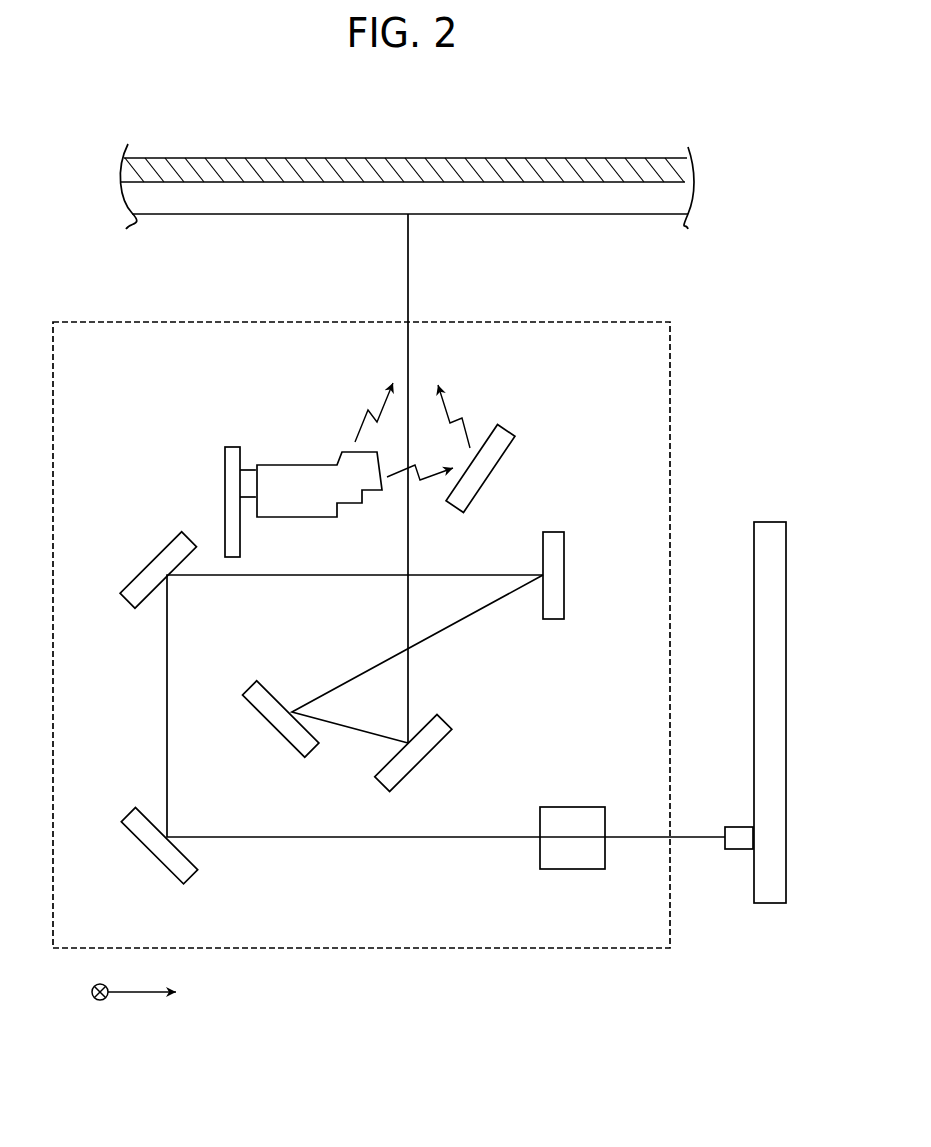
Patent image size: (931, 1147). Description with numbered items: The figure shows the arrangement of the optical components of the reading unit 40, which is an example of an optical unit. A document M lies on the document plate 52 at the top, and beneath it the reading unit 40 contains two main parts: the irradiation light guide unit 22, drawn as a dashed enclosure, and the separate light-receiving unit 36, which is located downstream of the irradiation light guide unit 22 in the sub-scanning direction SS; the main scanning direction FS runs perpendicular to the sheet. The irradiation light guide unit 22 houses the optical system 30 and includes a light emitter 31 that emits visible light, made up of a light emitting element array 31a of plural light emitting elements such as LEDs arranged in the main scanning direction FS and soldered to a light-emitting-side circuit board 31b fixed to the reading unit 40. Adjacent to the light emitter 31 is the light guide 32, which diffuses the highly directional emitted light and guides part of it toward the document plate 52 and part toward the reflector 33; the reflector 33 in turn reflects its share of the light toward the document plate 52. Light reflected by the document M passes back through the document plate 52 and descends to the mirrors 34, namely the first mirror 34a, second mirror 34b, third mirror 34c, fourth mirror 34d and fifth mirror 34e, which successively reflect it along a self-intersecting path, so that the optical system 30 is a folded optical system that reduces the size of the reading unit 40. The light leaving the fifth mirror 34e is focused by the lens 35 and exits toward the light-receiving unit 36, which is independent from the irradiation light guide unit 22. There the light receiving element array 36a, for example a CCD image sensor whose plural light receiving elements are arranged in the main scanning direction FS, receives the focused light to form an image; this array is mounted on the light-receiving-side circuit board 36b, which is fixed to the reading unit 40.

The document M is at (545, 157).
The document plate 52 is at (570, 206).
The reading unit 40 is at (722, 268).
The irradiation light guide unit 22 is at (443, 965).
The optical system 30 is at (582, 416).
The light emitter 31 is at (122, 482).
The light emitting element array 31a is at (248, 476).
The light-emitting-side circuit board 31b is at (232, 483).
The light guide 32 is at (298, 466).
The reflector 33 is at (506, 433).
The mirrors 34 is at (547, 721).
The first mirror 34a is at (443, 725).
The second mirror 34b is at (267, 697).
The third mirror 34c is at (558, 562).
The fourth mirror 34d is at (150, 574).
The fifth mirror 34e is at (133, 818).
The lens 35 is at (546, 851).
The light-receiving unit 36 is at (761, 944).
The light receiving element array 36a is at (736, 846).
The light-receiving-side circuit board 36b is at (760, 773).
The main scanning direction FS is at (102, 1009).
The sub-scanning direction SS is at (158, 993).